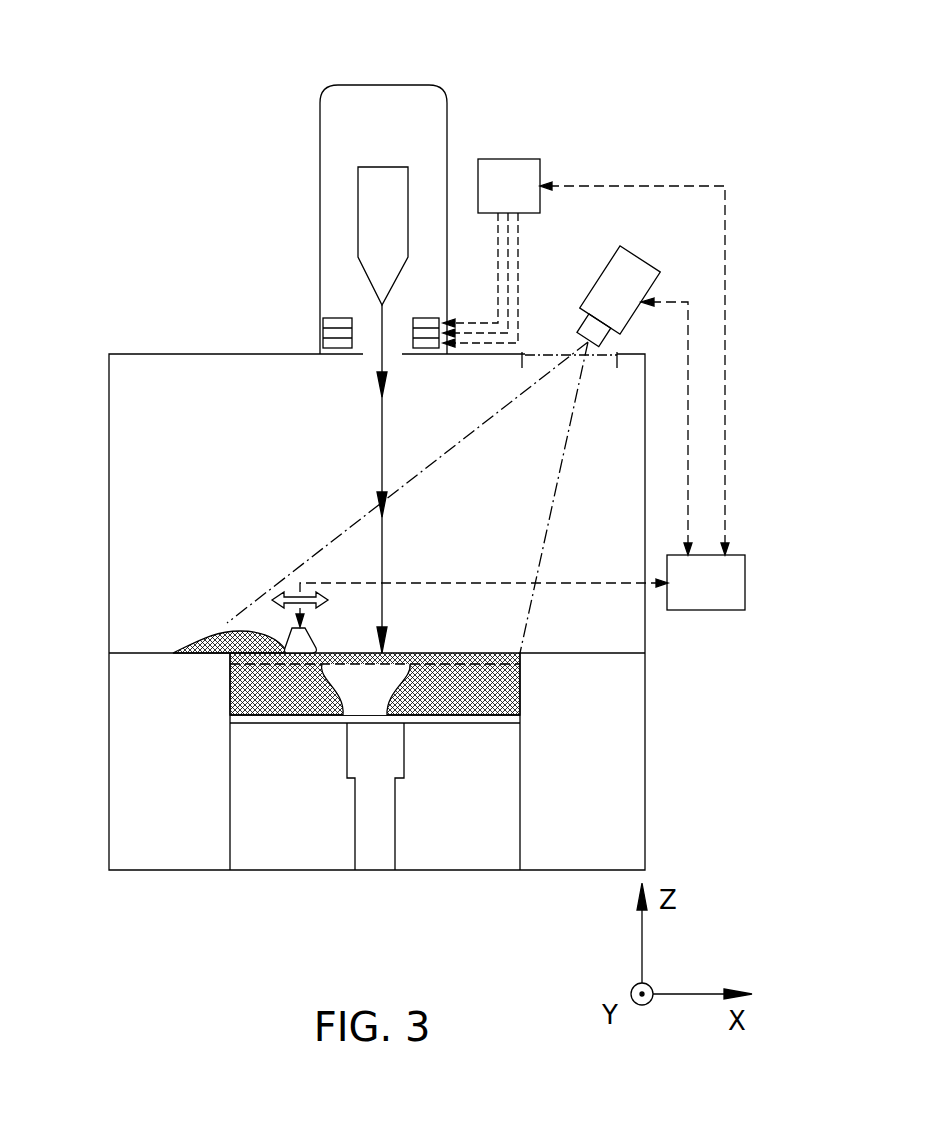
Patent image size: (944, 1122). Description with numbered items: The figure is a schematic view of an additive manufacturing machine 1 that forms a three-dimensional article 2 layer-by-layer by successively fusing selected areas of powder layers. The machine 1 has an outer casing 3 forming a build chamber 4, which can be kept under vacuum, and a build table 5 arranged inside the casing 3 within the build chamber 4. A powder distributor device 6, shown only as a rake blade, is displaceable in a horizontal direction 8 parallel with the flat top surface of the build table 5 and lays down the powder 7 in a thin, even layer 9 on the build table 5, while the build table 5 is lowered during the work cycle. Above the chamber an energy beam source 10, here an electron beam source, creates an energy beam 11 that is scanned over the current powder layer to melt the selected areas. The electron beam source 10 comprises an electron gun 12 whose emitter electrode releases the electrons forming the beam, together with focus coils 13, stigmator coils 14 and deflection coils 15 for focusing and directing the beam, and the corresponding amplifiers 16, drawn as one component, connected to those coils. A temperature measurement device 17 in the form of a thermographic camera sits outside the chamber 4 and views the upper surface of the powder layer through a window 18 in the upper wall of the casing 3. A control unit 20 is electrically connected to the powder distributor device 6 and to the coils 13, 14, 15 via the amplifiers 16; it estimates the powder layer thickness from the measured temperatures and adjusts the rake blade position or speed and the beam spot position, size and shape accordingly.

The AM machine 1 is at (200, 105).
The three-dimensional article 2 is at (365, 688).
The outer casing 3 is at (109, 403).
The build chamber 4 is at (157, 453).
The build table 5 is at (467, 717).
The powder distributor device 6 is at (288, 642).
The powder 7 is at (193, 647).
The horizontal direction 8 is at (293, 628).
The layer 9 is at (357, 653).
The energy beam source 10 is at (352, 68).
The energy beam 11 is at (382, 447).
The electron gun 12 is at (383, 217).
The focus coils 13 is at (320, 320).
The stigmator coils 14 is at (320, 332).
The deflection coils 15 is at (320, 342).
The amplifiers 16 is at (510, 182).
The temperature measurement device 17 is at (620, 290).
The window 18 is at (538, 353).
The control unit 20 is at (707, 588).